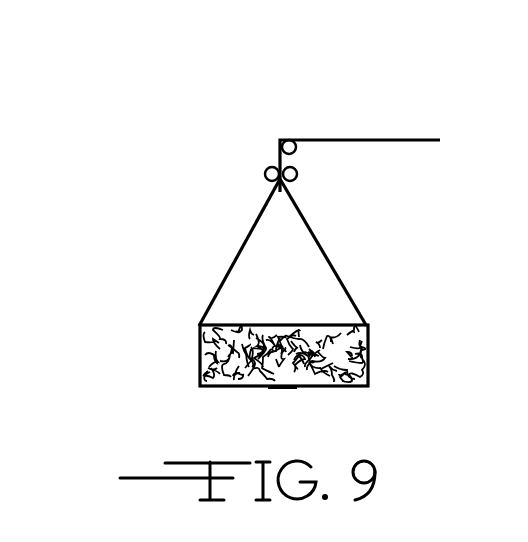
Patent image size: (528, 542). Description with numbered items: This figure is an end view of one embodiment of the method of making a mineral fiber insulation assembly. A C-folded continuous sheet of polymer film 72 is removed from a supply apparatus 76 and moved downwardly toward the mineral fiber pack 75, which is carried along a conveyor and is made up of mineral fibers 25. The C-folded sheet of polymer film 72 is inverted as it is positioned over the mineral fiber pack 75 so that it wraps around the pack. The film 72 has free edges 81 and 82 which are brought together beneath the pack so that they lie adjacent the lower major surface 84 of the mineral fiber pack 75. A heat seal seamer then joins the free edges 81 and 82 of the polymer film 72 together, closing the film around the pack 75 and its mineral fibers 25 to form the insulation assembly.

The C-folded continuous sheet of polymer film 72 is at (387, 139).
The supply apparatus 76 is at (298, 152).
The mineral fiber pack 75 is at (372, 349).
The fibrous material 25 is at (238, 330).
The free edge 82 is at (285, 389).
The free edge 81 is at (325, 378).
The lower major surface 84 is at (215, 386).